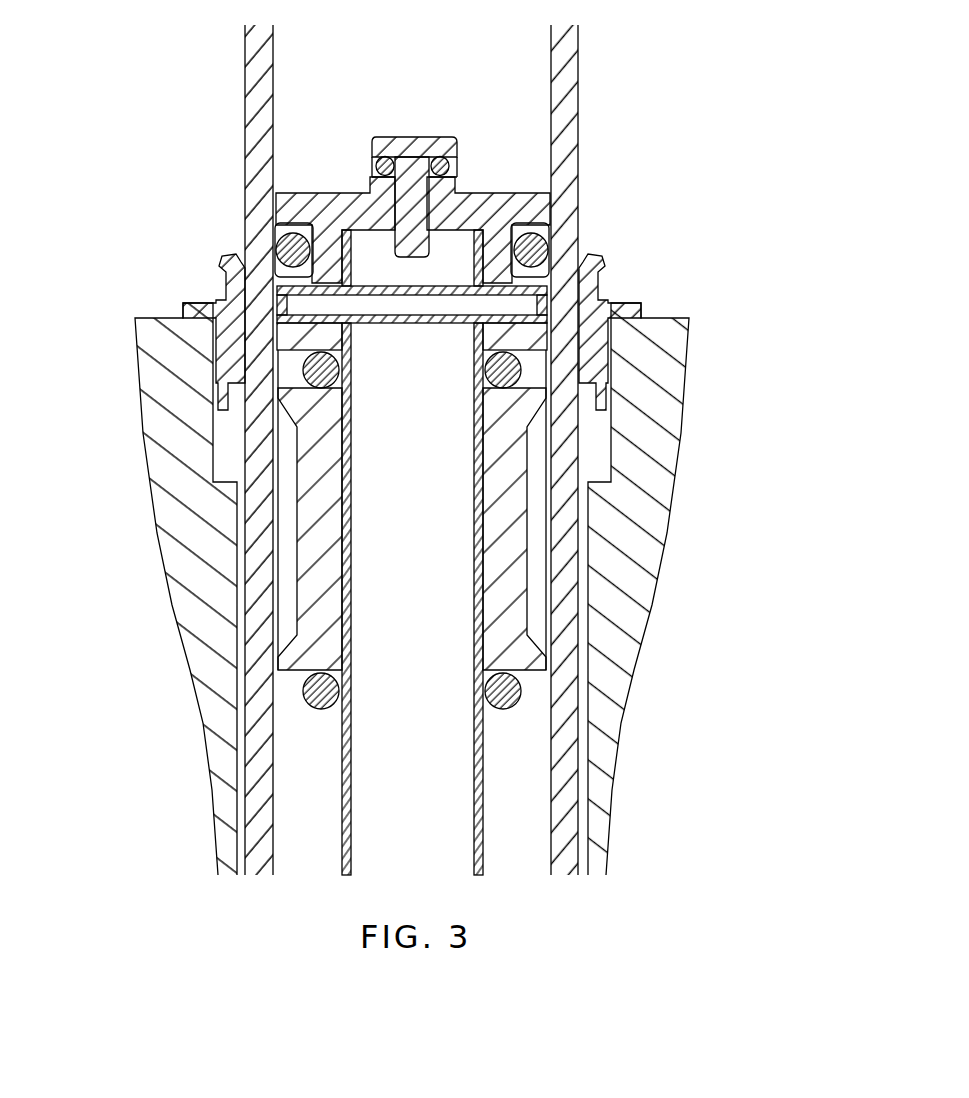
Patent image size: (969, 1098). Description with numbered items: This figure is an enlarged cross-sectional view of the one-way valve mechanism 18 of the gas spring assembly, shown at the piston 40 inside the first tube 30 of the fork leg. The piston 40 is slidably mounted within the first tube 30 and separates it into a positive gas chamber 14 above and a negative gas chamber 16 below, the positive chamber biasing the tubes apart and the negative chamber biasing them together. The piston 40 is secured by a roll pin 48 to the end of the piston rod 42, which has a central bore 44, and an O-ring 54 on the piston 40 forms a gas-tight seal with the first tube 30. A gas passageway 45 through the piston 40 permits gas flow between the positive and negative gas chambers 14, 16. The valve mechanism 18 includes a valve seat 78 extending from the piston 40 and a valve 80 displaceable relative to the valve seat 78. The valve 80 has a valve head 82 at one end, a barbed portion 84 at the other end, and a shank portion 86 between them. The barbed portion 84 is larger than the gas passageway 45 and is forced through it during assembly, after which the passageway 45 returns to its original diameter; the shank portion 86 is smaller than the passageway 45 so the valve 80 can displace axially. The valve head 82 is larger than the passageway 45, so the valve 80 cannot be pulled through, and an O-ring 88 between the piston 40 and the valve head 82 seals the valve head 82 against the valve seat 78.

The positive gas chamber 14 is at (495, 93).
The negative gas chamber 16 is at (502, 810).
The one-way valve mechanism 18 is at (375, 107).
The first tube 30 is at (560, 47).
The piston 40 is at (332, 218).
The piston rod 42 is at (480, 522).
The central bore 44 is at (430, 607).
The gas passageway 45 is at (392, 228).
The roll pin 48 is at (597, 291).
The O-ring 54 is at (292, 257).
The valve seat 78 is at (383, 186).
The valve 80 is at (370, 148).
The valve head 82 is at (455, 135).
The barbed portion 84 is at (429, 243).
The shank portion 86 is at (422, 202).
The O-ring 88 is at (457, 162).